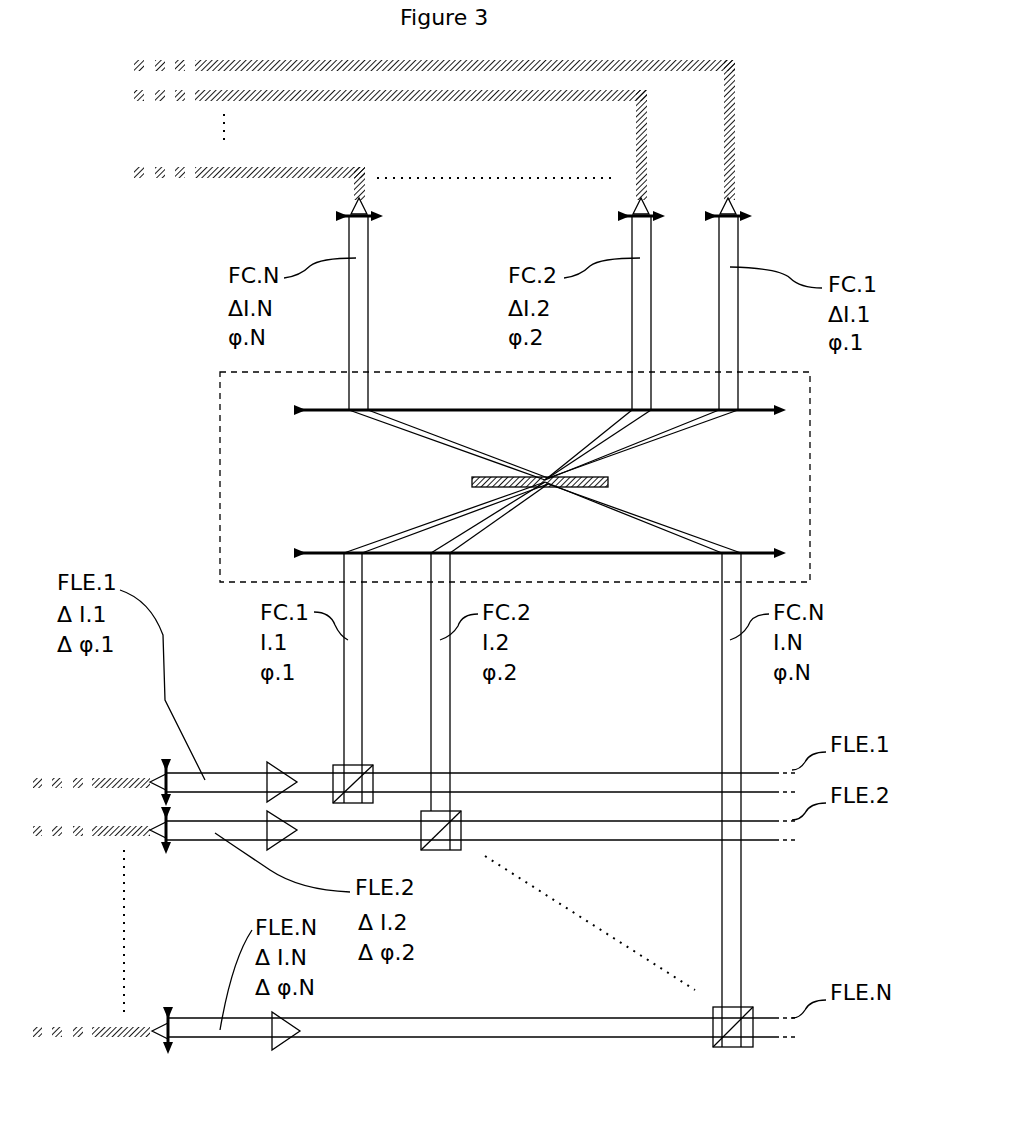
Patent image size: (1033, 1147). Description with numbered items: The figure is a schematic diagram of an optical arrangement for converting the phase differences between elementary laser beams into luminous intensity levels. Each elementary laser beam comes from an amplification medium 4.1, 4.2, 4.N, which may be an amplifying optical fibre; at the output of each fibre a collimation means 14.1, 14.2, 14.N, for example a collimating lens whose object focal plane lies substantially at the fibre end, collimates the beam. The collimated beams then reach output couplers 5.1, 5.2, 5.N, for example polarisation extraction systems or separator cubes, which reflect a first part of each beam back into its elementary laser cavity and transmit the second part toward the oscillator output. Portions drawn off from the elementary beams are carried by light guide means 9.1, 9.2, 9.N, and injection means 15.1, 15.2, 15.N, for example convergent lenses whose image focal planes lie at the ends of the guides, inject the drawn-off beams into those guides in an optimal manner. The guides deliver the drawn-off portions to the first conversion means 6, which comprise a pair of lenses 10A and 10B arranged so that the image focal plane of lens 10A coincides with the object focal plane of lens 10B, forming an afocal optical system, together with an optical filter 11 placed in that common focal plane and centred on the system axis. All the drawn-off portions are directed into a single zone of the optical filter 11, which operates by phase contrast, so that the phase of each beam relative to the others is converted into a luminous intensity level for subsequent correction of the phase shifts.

The light guide means 9.1 is at (735, 138).
The light guide means 9.2 is at (647, 140).
The light guide means 9.N is at (280, 166).
The injection means 15.1 is at (752, 216).
The injection means 15.2 is at (625, 216).
The injection means 15.N is at (344, 216).
The first conversion means 6 is at (812, 470).
The lens 10A is at (318, 551).
The lens 10B is at (318, 412).
The optical filter 11 is at (612, 480).
The collimation means 14.1 is at (166, 770).
The collimation means 14.2 is at (168, 845).
The collimation means 14.N is at (170, 1045).
The amplification medium 4.1 is at (270, 770).
The amplification medium 4.2 is at (282, 838).
The amplification medium 4.N is at (287, 1038).
The output coupler 5.1 is at (338, 768).
The output coupler 5.2 is at (444, 850).
The output coupler 5.N is at (742, 1048).